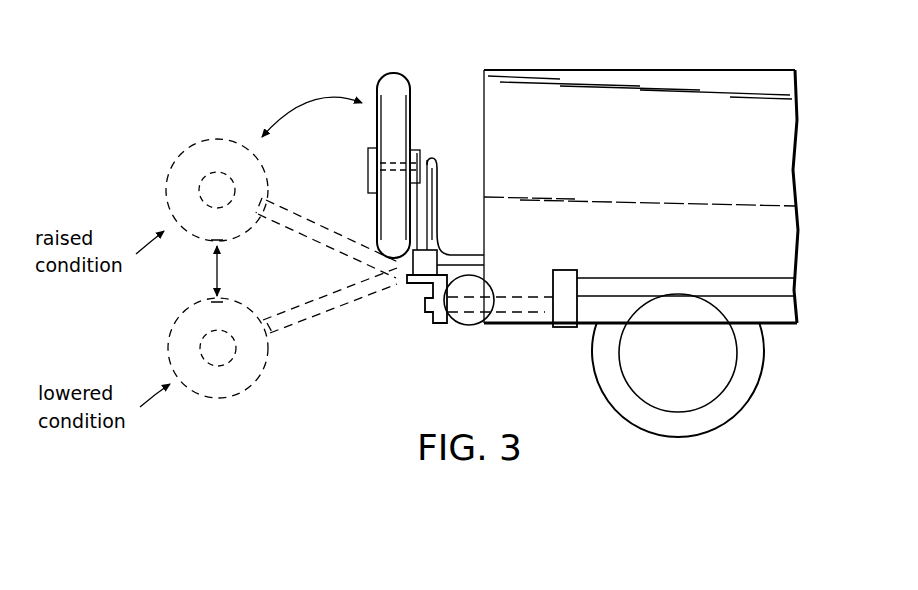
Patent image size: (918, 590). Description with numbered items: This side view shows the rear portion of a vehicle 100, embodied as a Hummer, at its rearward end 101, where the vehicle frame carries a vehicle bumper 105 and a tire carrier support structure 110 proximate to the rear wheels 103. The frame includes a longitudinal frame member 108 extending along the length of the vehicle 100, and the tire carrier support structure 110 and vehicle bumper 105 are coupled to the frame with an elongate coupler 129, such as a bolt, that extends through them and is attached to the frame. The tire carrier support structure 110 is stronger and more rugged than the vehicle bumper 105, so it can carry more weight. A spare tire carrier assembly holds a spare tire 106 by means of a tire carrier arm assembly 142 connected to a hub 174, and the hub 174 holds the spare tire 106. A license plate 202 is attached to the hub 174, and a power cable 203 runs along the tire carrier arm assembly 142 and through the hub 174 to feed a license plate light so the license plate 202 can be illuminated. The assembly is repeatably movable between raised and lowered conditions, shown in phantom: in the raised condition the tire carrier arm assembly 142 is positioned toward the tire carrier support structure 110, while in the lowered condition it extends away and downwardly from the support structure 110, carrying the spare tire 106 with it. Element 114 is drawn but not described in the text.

The vehicle 100 is at (695, 54).
The rearward end 101 is at (500, 64).
The rear wheels 103 is at (722, 412).
The vehicle bumper 105 is at (472, 325).
The spare tire 106 is at (392, 83).
The longitudinal frame member 108 is at (682, 290).
The tire carrier support structure 110 is at (408, 278).
The mounting block 114 is at (578, 261).
The coupler 129 is at (516, 305).
The tire carrier arm assembly 142 is at (443, 170).
The hub 174 is at (411, 150).
The license plate 202 is at (369, 168).
The power cable 203 is at (432, 224).